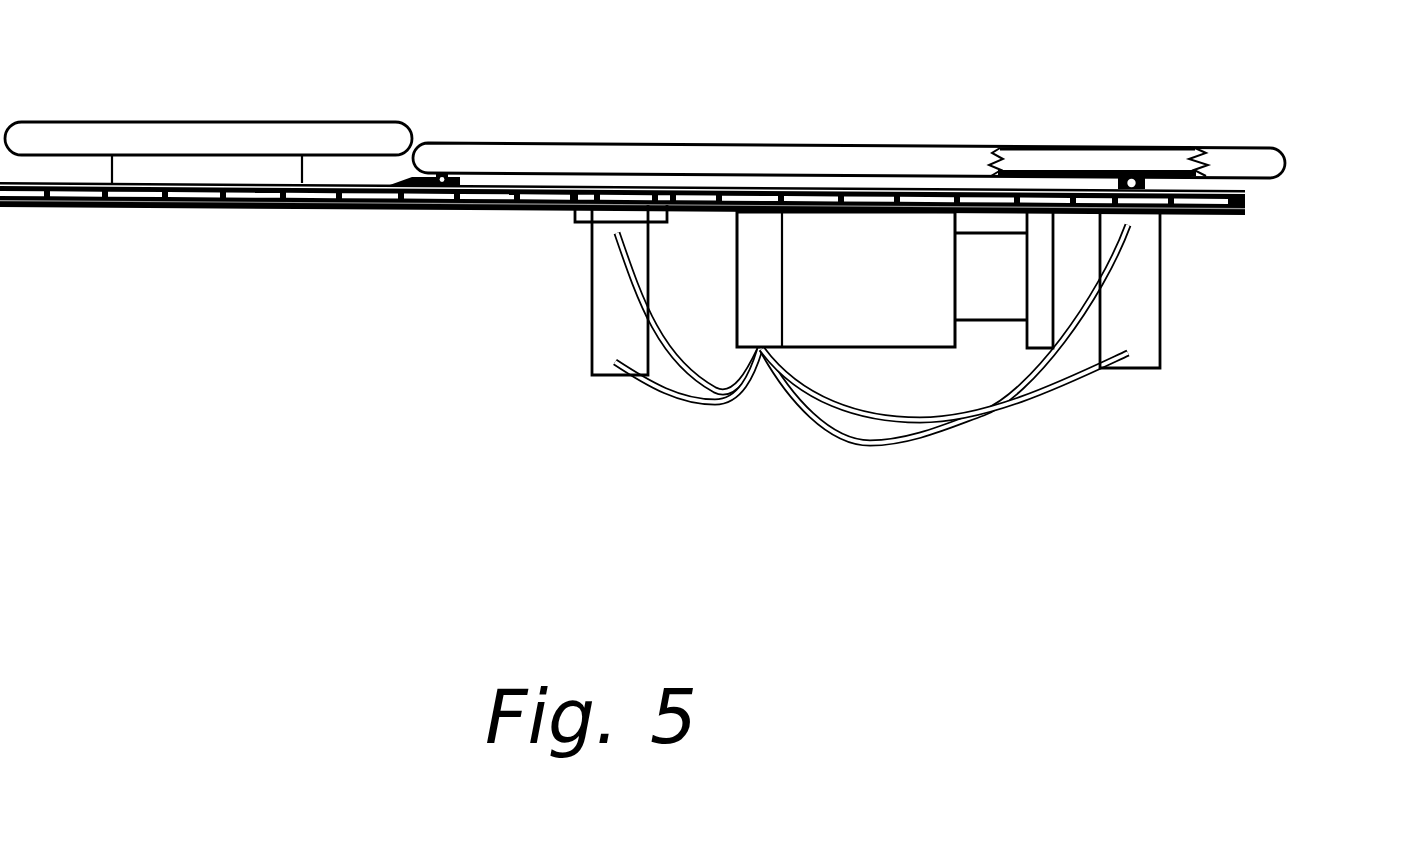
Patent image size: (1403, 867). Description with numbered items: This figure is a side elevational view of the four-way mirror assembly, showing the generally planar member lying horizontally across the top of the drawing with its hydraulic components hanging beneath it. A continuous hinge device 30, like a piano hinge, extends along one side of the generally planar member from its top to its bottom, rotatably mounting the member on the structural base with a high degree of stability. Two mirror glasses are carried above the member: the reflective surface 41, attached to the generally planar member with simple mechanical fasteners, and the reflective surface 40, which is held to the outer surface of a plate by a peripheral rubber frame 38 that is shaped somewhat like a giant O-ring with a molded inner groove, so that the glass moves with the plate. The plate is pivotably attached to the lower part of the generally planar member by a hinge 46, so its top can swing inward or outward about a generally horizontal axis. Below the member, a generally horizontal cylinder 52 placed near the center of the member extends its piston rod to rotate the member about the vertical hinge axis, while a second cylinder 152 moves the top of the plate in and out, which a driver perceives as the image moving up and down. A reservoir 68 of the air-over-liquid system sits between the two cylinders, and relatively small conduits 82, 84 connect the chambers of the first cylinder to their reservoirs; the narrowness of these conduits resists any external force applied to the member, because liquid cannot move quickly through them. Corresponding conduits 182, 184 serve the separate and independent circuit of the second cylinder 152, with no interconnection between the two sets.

The hinge device 30 is at (1246, 197).
The peripheral rubber frame 38 is at (737, 160).
The reflective surface 40 is at (1077, 167).
The reflective surface 41 is at (213, 122).
The hinge 46 is at (370, 208).
The cylinder 52 is at (590, 303).
The reservoir 68 is at (907, 301).
The conduit 82 is at (660, 397).
The conduit 84 is at (675, 358).
The second cylinder 152 is at (1160, 268).
The conduit 182 is at (1047, 403).
The conduit 184 is at (950, 440).